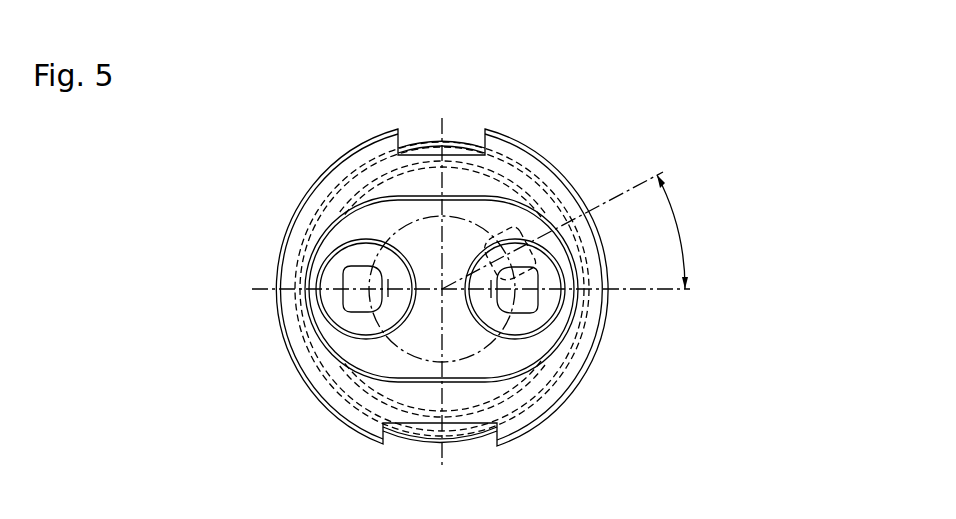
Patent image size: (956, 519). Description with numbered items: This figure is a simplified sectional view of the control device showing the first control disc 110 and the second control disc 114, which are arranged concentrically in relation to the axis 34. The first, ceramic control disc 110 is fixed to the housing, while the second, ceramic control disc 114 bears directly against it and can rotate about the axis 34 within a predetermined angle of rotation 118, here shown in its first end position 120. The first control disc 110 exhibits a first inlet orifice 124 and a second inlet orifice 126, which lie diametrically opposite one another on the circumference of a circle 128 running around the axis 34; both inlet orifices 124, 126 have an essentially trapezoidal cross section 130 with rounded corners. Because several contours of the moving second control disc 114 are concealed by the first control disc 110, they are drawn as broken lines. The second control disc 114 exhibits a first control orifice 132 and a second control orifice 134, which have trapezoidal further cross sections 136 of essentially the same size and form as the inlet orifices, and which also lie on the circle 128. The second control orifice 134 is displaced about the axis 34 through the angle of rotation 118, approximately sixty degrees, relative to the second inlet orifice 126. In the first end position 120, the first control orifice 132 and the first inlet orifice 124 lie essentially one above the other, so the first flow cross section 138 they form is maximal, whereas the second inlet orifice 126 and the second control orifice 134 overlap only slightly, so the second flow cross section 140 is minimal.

The axis 34 is at (438, 290).
The first control disc 110 is at (558, 395).
The second control disc 114 is at (475, 328).
The angle of rotation 118 is at (588, 230).
The first end position 120 is at (460, 437).
The first inlet orifice 124 is at (362, 290).
The second inlet orifice 126 is at (527, 303).
The circle 128 is at (472, 218).
The trapezoidal cross section 130 is at (249, 269).
The first control orifice 132 is at (353, 305).
The second control orifice 134 is at (510, 228).
The further cross sections 136 is at (249, 269).
The first flow cross section 138 is at (350, 278).
The second flow cross section 140 is at (512, 277).